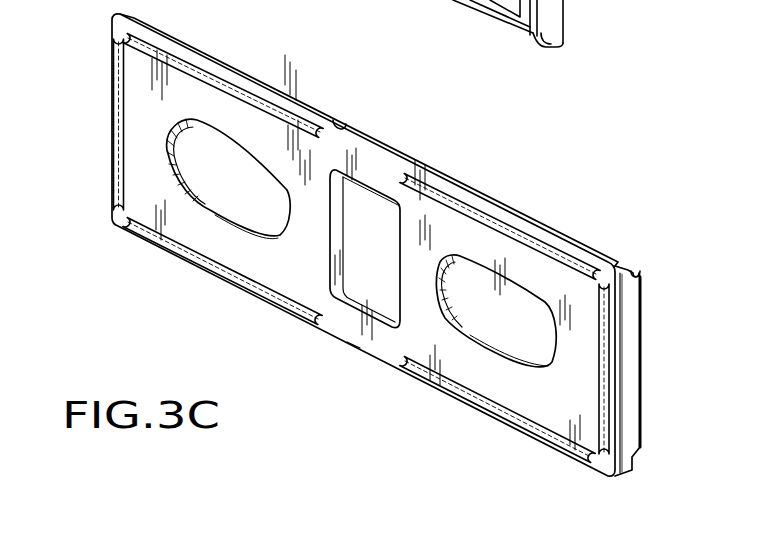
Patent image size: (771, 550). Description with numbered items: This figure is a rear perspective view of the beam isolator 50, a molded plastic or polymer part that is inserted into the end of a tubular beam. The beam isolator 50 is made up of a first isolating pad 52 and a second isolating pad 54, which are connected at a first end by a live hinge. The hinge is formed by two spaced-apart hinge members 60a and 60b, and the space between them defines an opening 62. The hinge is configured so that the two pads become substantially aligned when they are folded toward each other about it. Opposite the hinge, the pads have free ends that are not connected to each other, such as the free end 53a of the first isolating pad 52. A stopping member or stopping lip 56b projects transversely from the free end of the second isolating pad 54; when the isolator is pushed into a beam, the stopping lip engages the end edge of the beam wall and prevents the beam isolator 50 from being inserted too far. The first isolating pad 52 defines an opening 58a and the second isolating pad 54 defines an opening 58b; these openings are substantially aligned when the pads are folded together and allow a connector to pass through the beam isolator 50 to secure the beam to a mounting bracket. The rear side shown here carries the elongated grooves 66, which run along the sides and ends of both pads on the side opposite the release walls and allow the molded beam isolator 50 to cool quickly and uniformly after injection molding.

The beam isolator 50 is at (538, 168).
The first isolating pad 52 is at (190, 268).
The free end of first isolating pad 53a is at (626, 392).
The second isolating pad 54 is at (517, 432).
The stopping member 56b is at (639, 278).
The opening in first isolating pad 58a is at (237, 215).
The opening in second isolating pad 58b is at (447, 327).
The hinge member 60a is at (358, 162).
The hinge member 60b is at (353, 320).
The opening 62 is at (375, 220).
The grooves 66 is at (203, 80).